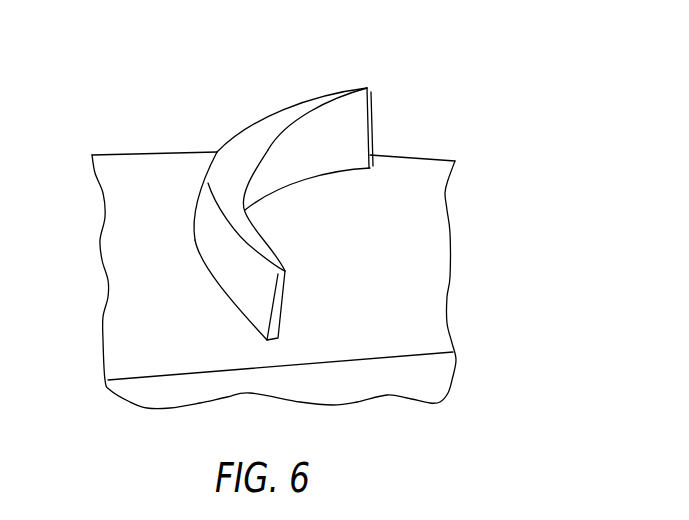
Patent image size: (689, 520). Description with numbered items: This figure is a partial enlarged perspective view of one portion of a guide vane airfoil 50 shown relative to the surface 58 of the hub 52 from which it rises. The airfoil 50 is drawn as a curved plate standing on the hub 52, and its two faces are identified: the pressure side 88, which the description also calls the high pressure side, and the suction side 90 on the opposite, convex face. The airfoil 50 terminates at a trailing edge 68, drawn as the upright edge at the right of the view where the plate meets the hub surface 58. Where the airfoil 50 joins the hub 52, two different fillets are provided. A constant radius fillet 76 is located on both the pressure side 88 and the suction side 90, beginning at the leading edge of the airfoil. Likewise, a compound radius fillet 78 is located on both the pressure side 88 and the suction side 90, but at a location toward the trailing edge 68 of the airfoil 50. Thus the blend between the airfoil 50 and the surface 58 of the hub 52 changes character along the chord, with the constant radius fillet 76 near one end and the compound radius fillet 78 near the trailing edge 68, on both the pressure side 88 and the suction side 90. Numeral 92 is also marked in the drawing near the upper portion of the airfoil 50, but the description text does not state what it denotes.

The guide vane airfoil 50 is at (243, 150).
The hub 52 is at (277, 350).
The surface of the hub 58 is at (400, 283).
The trailing edge 68 is at (373, 127).
The constant radius fillet 76 is at (380, 170).
The compound radius fillet 78 is at (240, 312).
The pressure side 88 is at (318, 145).
The suction side 90 is at (220, 260).
The tip portion 92 is at (345, 130).